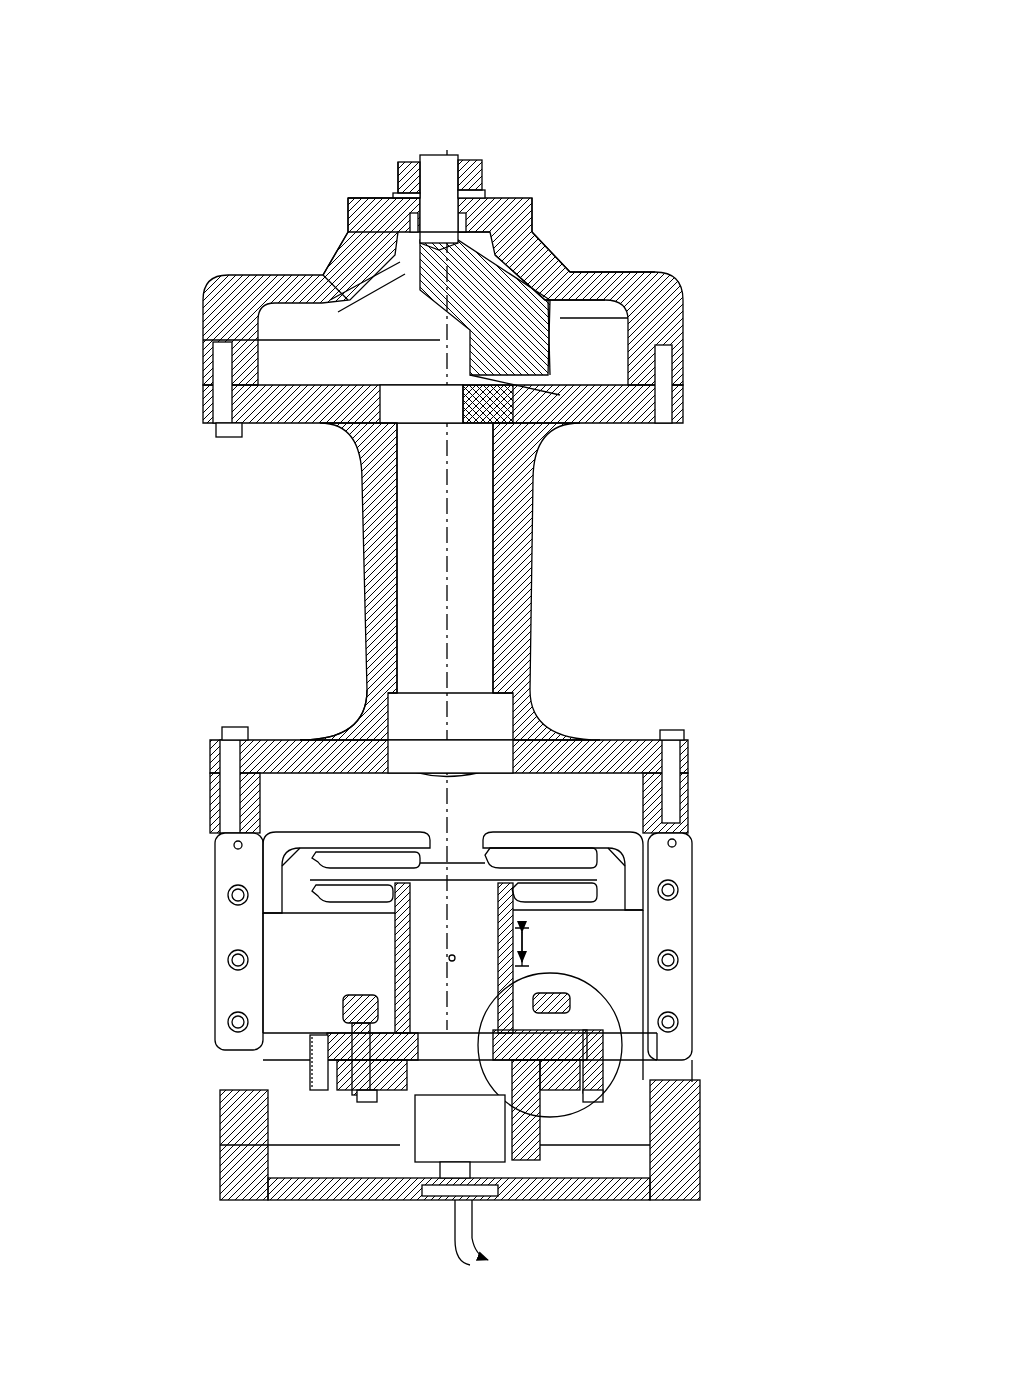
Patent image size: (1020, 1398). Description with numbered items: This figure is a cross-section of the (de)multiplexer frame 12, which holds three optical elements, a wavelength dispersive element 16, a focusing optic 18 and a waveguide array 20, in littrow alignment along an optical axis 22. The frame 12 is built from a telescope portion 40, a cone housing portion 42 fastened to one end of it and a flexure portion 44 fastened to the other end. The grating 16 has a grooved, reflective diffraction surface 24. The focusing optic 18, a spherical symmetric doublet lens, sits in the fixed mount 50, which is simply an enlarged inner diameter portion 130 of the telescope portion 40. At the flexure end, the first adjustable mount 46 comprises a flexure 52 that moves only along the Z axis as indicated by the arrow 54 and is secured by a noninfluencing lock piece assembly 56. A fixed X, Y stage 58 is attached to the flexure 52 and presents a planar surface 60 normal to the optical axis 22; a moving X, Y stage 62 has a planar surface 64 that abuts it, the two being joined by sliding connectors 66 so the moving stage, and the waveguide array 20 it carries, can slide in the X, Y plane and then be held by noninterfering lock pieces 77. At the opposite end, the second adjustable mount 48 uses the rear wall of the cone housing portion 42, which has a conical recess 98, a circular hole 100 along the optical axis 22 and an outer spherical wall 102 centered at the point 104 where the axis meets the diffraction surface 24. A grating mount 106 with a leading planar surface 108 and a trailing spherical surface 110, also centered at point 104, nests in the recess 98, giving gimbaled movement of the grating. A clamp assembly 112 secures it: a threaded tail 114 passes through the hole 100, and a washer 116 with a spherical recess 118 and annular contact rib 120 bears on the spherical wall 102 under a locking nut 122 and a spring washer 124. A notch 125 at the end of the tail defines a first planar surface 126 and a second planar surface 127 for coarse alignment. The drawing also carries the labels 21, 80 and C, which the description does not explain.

The (de)multiplexer frame 12 is at (252, 610).
The wavelength dispersive element 16 is at (580, 420).
The focusing optic 18 is at (497, 727).
The waveguide array 20 is at (495, 1160).
The hub 21 is at (360, 200).
The optical axis 22 is at (447, 470).
The diffraction surface 24 is at (500, 463).
The telescope portion 40 is at (517, 563).
The cone housing portion 42 is at (212, 320).
The flexure portion 44 is at (228, 800).
The first adjustable mount 46 is at (720, 937).
The second adjustable mount 48 is at (680, 313).
The fixed mount 50 is at (395, 738).
The flexure 52 is at (633, 863).
The arrow 54 is at (530, 948).
The noninfluencing lock piece assembly 56 is at (708, 982).
The fixed X, Y stage 58 is at (640, 1042).
The planar surface 60 is at (410, 1085).
The moving X, Y stage 62 is at (630, 1128).
The planar surface 64 is at (310, 1046).
The sliding connector 66 is at (612, 978).
The noninterfering lock pieces 77 is at (625, 1097).
The bottom housing 80 is at (550, 1157).
The conical recess 98 is at (563, 263).
The circular hole 100 is at (500, 200).
The spherical wall 102 is at (347, 243).
The point 104 is at (360, 412).
The grating mount 106 is at (557, 247).
The leading planar surface 108 is at (397, 200).
The trailing spherical surface 110 is at (575, 268).
The clamp assembly 112 is at (520, 157).
The threaded tail 114 is at (447, 150).
The washer 116 is at (470, 215).
The spherical recess 118 is at (520, 185).
The annular contact rib 120 is at (338, 262).
The locking nut 122 is at (470, 147).
The spring washer 124 is at (490, 150).
The notch 125 is at (408, 143).
The first planar surface 126 is at (418, 150).
The second planar surface 127 is at (400, 178).
The enlarged inner diameter portion 130 is at (395, 712).
The detail circle C is at (552, 1045).